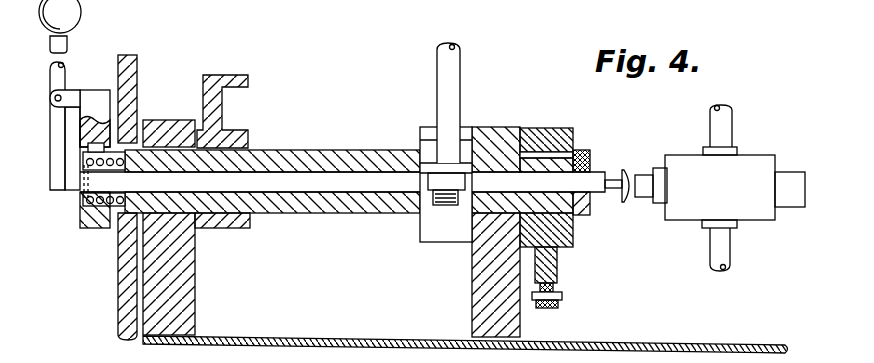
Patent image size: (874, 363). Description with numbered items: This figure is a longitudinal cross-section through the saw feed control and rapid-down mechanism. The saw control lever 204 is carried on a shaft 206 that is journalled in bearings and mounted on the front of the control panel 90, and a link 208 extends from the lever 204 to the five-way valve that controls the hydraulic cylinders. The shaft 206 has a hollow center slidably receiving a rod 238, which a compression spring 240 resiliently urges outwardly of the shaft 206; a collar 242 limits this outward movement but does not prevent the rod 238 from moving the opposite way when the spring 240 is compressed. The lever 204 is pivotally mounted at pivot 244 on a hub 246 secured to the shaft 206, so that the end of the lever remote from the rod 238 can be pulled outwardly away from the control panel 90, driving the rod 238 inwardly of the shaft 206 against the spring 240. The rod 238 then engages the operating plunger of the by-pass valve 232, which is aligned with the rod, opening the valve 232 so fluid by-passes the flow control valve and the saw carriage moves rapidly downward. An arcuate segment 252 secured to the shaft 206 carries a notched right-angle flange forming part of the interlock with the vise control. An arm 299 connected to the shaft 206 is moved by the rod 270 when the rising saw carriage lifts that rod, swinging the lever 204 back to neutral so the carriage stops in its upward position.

The lever 204 is at (53, 50).
The hub 246 is at (98, 103).
The pivot 244 is at (60, 96).
The arcuate segment 252 is at (200, 88).
The shaft 206 is at (310, 155).
The rod 238 is at (304, 176).
The arm 299 is at (420, 140).
The rod 270 is at (452, 92).
The collar 242 is at (589, 159).
The by-pass valve 232 is at (750, 162).
The compression spring 240 is at (82, 201).
The control panel 90 is at (115, 288).
The link 208 is at (546, 307).